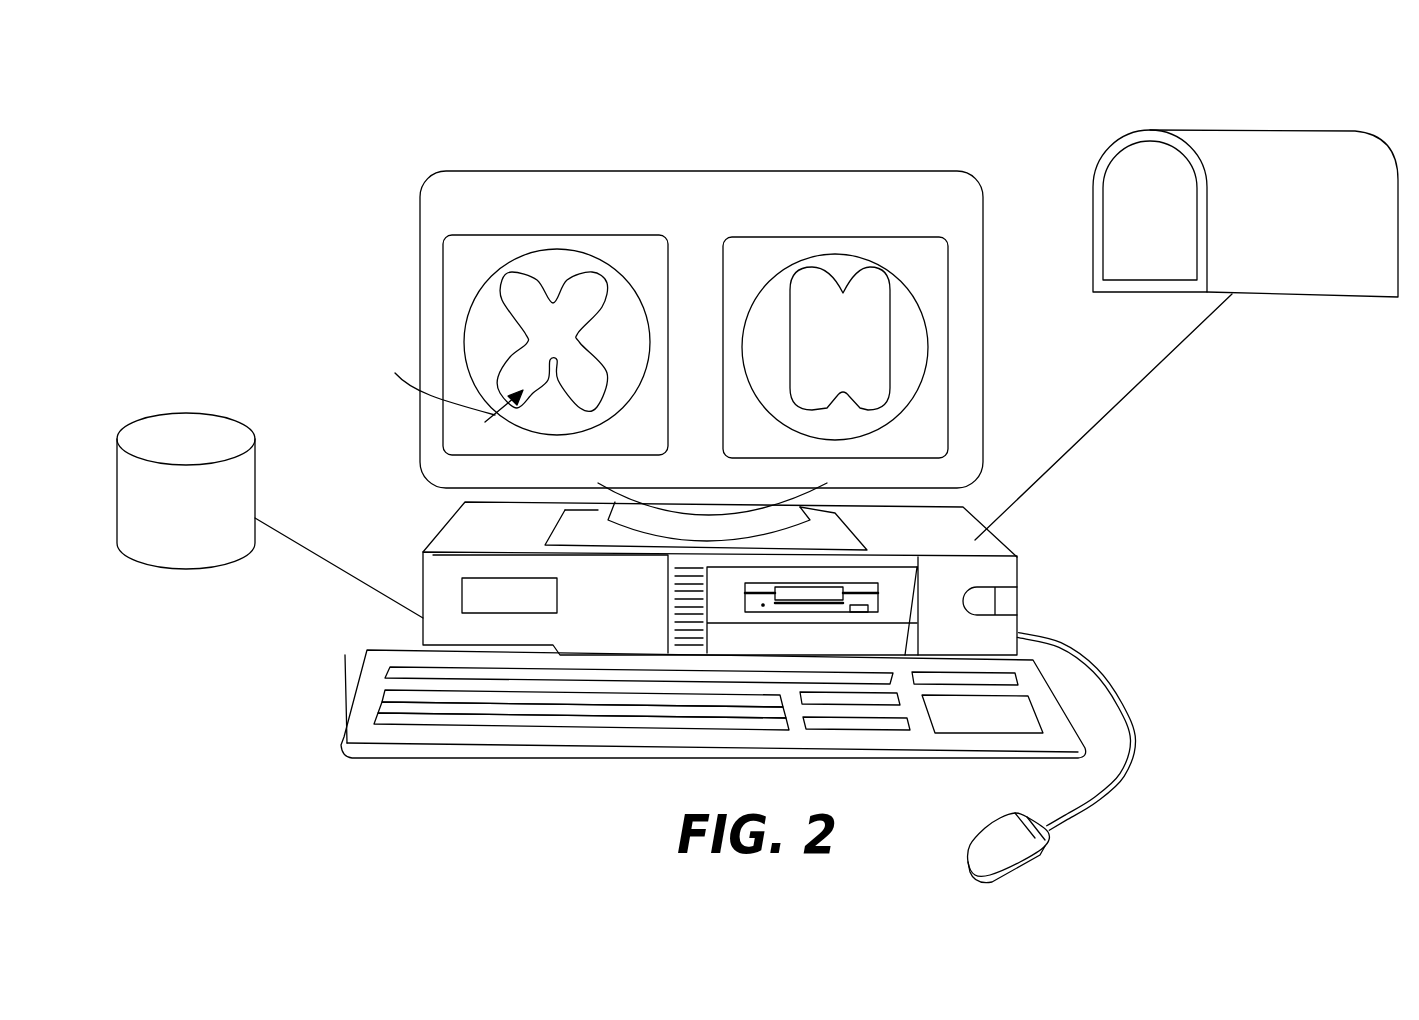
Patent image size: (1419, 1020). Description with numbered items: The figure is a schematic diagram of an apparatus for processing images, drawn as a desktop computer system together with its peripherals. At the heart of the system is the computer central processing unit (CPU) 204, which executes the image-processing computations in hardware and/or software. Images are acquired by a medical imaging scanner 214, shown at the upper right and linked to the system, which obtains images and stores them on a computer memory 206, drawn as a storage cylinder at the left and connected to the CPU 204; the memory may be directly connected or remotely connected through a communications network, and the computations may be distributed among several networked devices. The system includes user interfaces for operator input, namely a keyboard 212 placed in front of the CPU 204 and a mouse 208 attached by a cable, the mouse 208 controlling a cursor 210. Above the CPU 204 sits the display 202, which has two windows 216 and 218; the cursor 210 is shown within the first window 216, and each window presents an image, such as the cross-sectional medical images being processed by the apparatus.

The display 202 is at (983, 397).
The computer central processing unit (CPU) 204 is at (1018, 620).
The computer memory 206 is at (185, 413).
The mouse 208 is at (1048, 853).
The cursor 210 is at (447, 383).
The keyboard 212 is at (452, 758).
The medical imaging scanner 214 is at (1213, 130).
The window 216 is at (566, 250).
The window 218 is at (868, 273).